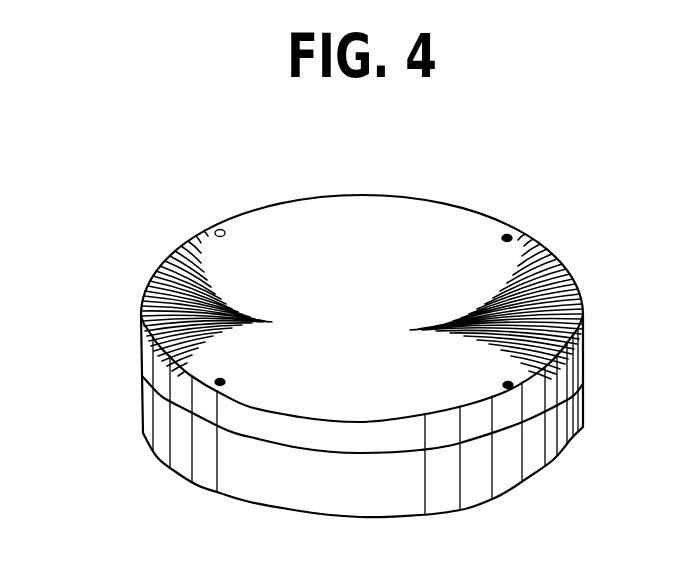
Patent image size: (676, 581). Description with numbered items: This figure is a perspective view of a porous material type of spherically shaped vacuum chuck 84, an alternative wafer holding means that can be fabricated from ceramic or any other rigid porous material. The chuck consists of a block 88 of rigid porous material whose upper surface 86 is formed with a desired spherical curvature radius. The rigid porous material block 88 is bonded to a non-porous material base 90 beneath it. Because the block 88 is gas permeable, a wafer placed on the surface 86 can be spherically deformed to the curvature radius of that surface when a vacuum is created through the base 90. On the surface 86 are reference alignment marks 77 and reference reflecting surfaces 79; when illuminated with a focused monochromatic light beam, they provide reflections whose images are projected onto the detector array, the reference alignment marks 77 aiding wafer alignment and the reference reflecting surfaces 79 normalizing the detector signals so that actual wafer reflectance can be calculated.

The spherically shaped vacuum chuck 84 is at (140, 275).
The surface 86 is at (377, 223).
The reference alignment marks 77 is at (220, 382).
The reference reflecting surfaces 79 is at (220, 233).
The block 88 is at (530, 395).
The non-porous material base 90 is at (438, 475).